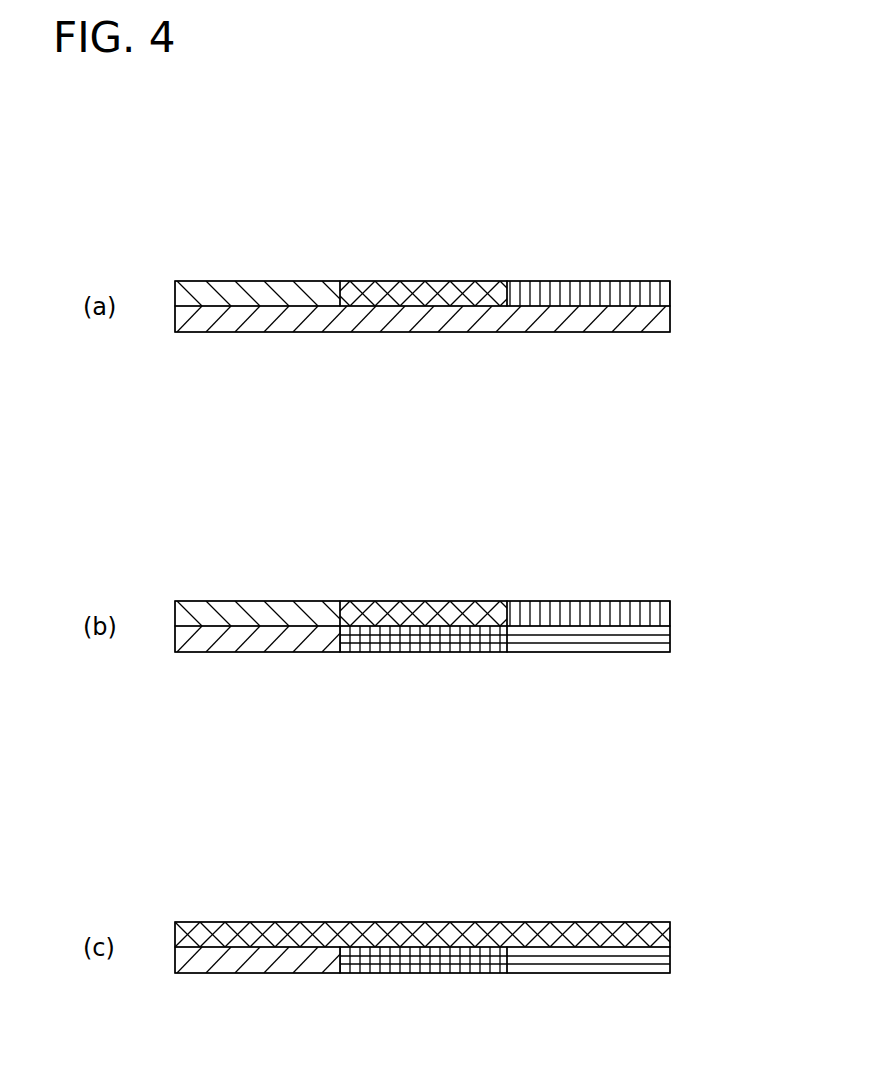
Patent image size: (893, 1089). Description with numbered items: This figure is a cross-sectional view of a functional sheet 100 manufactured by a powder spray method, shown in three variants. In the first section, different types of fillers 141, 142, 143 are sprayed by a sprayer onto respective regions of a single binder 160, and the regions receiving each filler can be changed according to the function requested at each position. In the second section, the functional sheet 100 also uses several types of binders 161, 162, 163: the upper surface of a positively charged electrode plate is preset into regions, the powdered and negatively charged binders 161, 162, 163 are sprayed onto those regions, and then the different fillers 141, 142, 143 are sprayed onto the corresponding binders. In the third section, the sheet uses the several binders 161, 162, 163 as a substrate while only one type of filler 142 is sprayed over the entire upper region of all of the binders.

The functional sheet 100 is at (651, 212).
The filler 141 is at (257, 281).
The filler 142 is at (421, 281).
The filler 143 is at (586, 281).
The binder 160 is at (426, 332).
The binder 161 is at (257, 840).
The binder 162 is at (423, 840).
The binder 163 is at (588, 840).